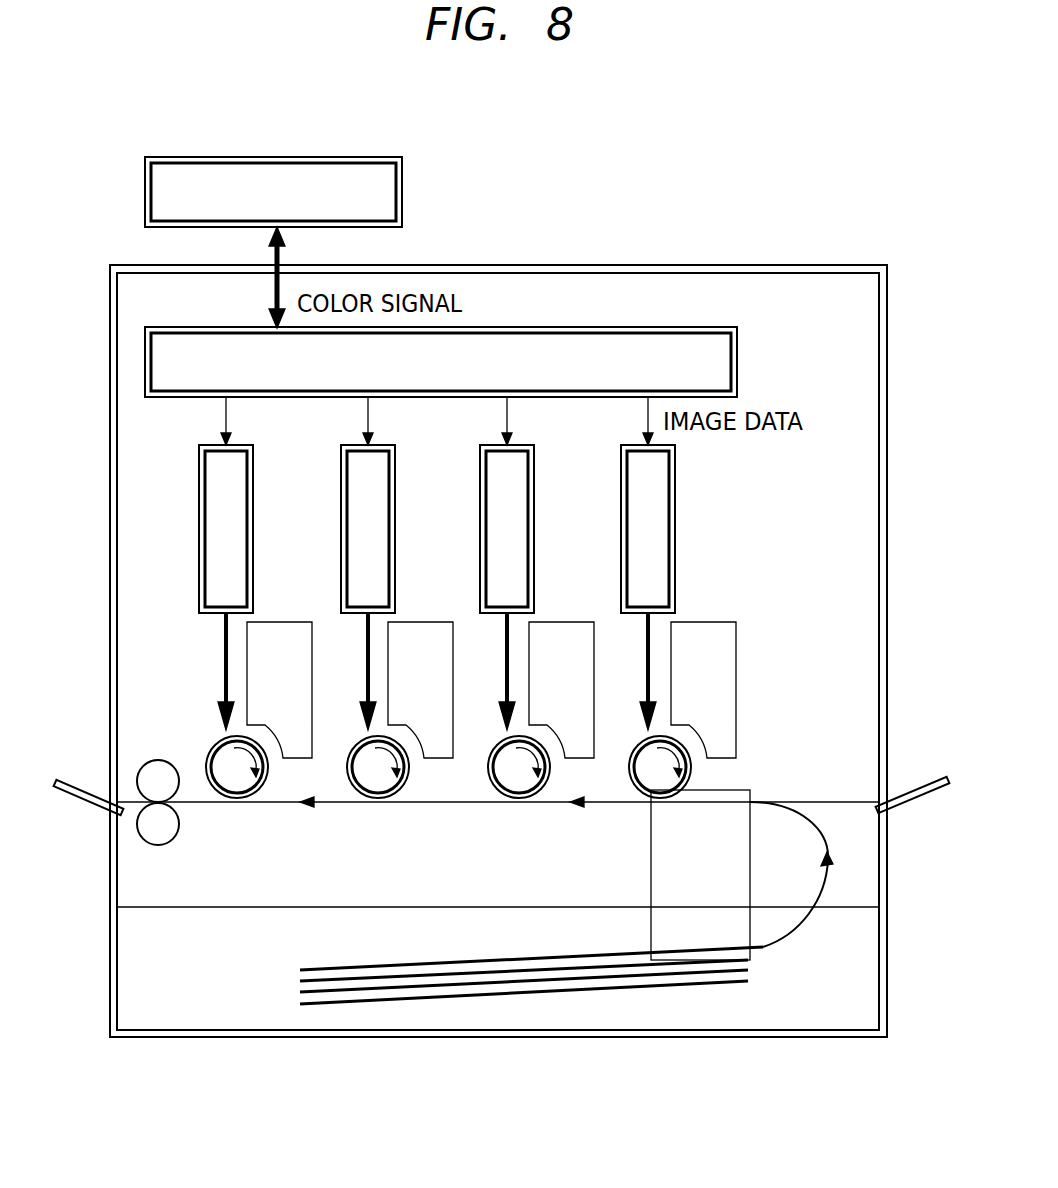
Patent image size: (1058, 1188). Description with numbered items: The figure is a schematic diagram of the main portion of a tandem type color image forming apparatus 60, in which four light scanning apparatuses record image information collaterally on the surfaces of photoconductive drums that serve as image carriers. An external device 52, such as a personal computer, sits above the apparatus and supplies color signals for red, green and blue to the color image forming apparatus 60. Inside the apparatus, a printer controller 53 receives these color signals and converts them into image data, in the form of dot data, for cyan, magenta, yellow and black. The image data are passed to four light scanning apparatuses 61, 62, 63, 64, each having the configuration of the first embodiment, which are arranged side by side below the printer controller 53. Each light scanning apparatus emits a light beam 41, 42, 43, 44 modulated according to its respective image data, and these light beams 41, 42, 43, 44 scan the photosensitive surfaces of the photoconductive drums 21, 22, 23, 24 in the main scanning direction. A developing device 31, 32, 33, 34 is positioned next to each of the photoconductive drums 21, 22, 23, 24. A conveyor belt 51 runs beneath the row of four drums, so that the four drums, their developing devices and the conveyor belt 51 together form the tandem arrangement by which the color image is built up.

The photoconductive drum 21 is at (237, 785).
The photoconductive drum 22 is at (378, 785).
The photoconductive drum 23 is at (519, 785).
The photoconductive drum 24 is at (660, 785).
The developing device 31 is at (290, 630).
The developing device 32 is at (431, 630).
The developing device 33 is at (573, 630).
The developing device 34 is at (713, 630).
The light beam 41 is at (225, 680).
The light beam 42 is at (366, 680).
The light beam 43 is at (505, 680).
The light beam 44 is at (646, 680).
The conveyor belt 51 is at (818, 812).
The external device 52 is at (402, 178).
The printer controller 53 is at (737, 350).
The color image forming apparatus 60 is at (752, 252).
The light scanning apparatus 61 is at (222, 503).
The light scanning apparatus 62 is at (363, 503).
The light scanning apparatus 63 is at (504, 503).
The light scanning apparatus 64 is at (637, 503).